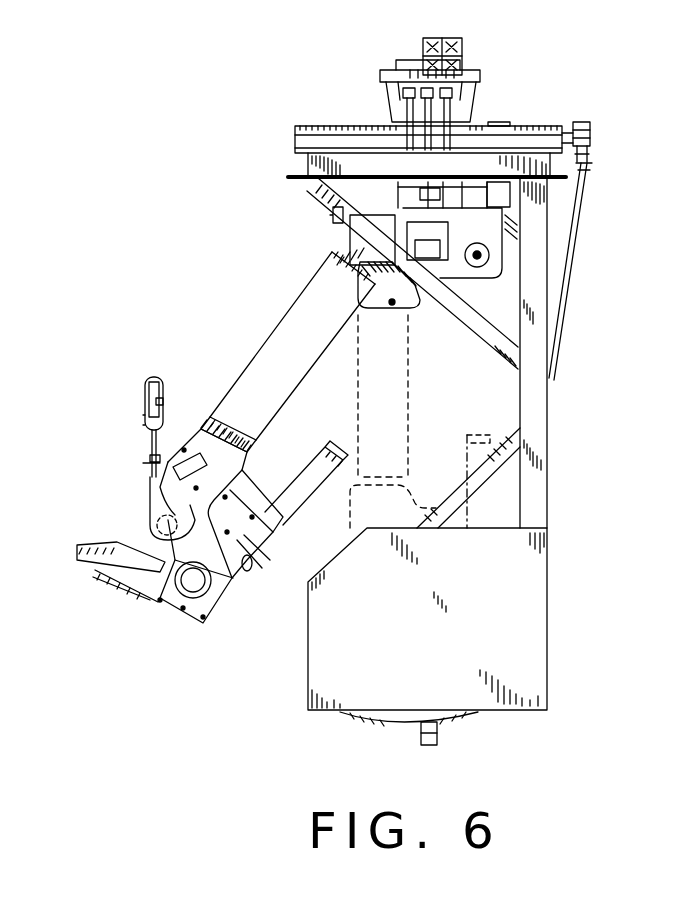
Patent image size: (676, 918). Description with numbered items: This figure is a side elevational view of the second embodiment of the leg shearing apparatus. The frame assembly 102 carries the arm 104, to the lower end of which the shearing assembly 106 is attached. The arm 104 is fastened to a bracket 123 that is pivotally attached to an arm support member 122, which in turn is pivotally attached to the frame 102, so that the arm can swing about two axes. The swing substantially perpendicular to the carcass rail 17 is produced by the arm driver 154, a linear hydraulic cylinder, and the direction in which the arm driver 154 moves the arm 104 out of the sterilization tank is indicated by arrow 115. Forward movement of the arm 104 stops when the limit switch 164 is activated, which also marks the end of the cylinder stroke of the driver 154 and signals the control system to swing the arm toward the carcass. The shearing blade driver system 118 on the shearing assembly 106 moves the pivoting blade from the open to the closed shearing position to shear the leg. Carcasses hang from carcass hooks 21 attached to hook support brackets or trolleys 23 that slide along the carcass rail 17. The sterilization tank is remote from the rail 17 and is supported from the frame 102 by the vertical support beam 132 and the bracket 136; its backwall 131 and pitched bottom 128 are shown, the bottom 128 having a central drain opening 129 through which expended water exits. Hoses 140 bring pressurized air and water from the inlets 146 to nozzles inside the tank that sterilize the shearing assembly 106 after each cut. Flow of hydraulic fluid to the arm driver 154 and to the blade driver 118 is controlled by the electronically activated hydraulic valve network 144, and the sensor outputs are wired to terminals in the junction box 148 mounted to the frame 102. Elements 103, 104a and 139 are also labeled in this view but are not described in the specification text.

The frame assembly 102 is at (300, 140).
The support plate 103 is at (307, 165).
The arm 104 is at (285, 342).
The piston rod (hidden) 104a is at (408, 432).
The shearing assembly 106 is at (160, 613).
The arrow 115 is at (270, 424).
The shearing blade driver system 118 is at (263, 577).
The arm support member 122 is at (363, 238).
The bracket 123 is at (330, 255).
The bottom 128 is at (462, 718).
The drain opening 129 is at (418, 737).
The backwall 131 is at (548, 612).
The vertical support beam 132 is at (533, 470).
The bracket 136 is at (490, 468).
The upper diagonal brace 139 is at (502, 345).
The hoses 140 is at (590, 200).
The electronically activated hydraulic valve network 144 is at (462, 52).
The inlets 146 is at (590, 120).
The junction box 148 is at (468, 98).
The arm driver 154 is at (415, 297).
The limit switch 164 is at (333, 210).
The carcass rail 17 is at (157, 430).
The carcass hook 21 is at (145, 528).
The hook support bracket or trolley 23 is at (160, 377).